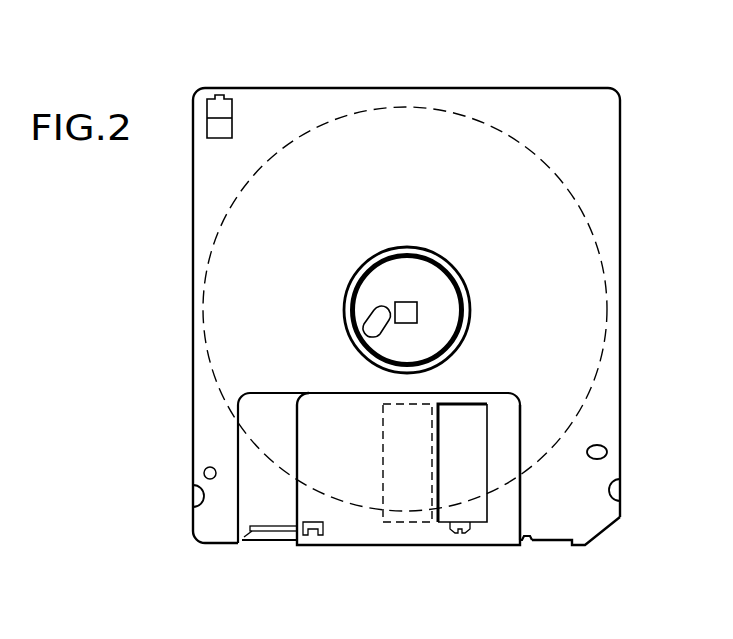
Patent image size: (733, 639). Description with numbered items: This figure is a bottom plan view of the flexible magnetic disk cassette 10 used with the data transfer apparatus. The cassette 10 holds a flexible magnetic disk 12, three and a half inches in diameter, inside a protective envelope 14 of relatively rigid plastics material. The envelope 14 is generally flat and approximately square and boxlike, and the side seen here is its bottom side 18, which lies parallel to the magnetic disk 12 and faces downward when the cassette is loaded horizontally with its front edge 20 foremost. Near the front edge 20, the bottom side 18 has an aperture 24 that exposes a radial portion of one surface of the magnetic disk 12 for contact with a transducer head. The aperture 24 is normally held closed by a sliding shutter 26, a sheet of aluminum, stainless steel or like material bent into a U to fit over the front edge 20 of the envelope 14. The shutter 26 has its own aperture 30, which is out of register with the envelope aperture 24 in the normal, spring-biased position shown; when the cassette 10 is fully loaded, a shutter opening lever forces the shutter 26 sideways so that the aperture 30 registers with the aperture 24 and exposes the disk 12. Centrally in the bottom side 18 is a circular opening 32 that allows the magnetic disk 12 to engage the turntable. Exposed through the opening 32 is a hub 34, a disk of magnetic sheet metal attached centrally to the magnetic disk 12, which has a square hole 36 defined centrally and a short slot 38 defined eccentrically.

The disk cassette 10 is at (604, 72).
The flexible magnetic disk 12 is at (569, 193).
The protective envelope 14 is at (623, 191).
The bottom side 18 is at (168, 315).
The front edge 20 is at (535, 561).
The aperture 24 is at (406, 494).
The sliding shutter 26 is at (408, 490).
The shutter aperture 30 is at (481, 421).
The circular opening 32 is at (459, 279).
The hub 34 is at (418, 266).
The square hole 36 is at (405, 301).
The short slot 38 is at (380, 306).